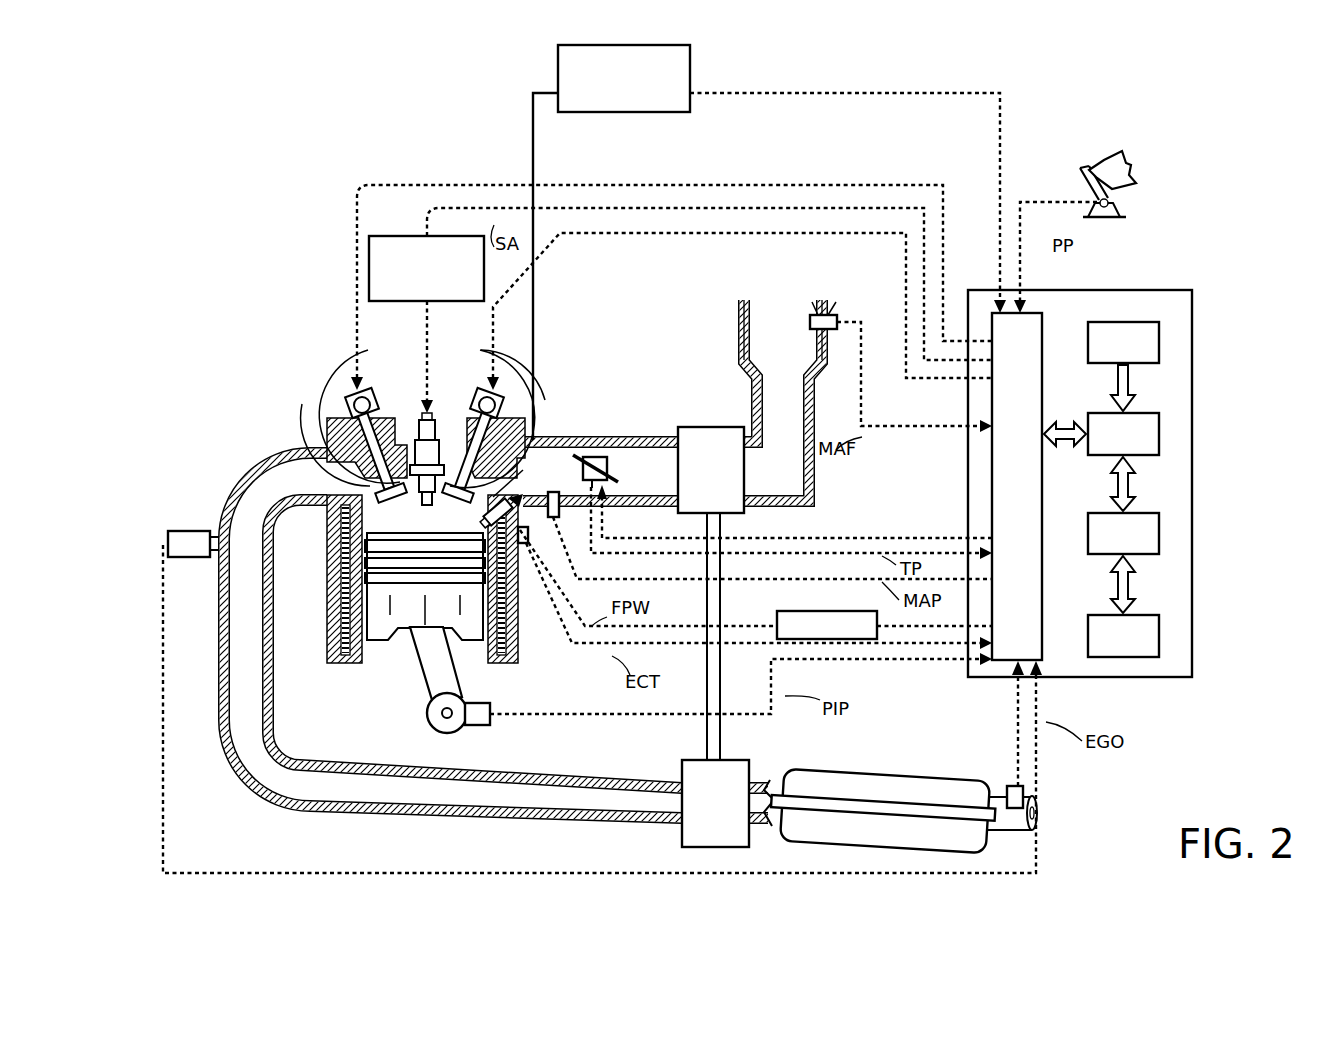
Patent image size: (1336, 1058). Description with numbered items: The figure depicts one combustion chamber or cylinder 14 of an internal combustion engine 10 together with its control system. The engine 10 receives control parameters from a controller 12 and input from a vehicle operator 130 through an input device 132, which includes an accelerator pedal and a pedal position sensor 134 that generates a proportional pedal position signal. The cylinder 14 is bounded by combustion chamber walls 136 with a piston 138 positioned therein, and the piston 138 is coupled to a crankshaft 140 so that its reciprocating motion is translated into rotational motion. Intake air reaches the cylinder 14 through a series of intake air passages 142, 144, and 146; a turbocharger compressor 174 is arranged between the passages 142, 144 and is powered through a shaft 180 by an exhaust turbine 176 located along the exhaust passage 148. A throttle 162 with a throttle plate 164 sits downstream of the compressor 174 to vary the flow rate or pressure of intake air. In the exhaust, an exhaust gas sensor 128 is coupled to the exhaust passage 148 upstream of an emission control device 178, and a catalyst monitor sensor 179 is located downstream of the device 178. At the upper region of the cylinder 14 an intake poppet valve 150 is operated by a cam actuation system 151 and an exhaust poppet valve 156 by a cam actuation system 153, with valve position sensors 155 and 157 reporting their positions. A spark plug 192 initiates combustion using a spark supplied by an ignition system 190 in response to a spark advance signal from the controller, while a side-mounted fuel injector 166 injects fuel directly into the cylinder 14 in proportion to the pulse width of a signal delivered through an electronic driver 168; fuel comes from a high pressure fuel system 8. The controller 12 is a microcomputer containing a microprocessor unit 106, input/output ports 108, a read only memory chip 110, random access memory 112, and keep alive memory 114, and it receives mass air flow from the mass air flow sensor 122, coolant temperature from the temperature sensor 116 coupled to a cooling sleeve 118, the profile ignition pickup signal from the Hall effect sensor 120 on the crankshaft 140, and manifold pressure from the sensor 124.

The internal combustion engine 10 is at (158, 124).
The high pressure fuel system 8 is at (692, 57).
The controller 12 is at (1195, 292).
The cylinder 14 is at (338, 522).
The microprocessor unit 106 is at (1160, 432).
The input/output ports 108 is at (1043, 319).
The read only memory chip 110 is at (1160, 340).
The random access memory 112 is at (1160, 533).
The keep alive memory 114 is at (1160, 637).
The temperature sensor 116 is at (535, 612).
The cooling sleeve 118 is at (515, 652).
The Hall effect sensor 120 is at (481, 726).
The mass air flow sensor 122 is at (828, 314).
The manifold pressure sensor 124 is at (556, 520).
The exhaust gas sensor 128 is at (168, 536).
The vehicle operator 130 is at (1132, 168).
The input device 132 is at (1084, 181).
The pedal position sensor 134 is at (1112, 203).
The combustion chamber walls 136 is at (362, 675).
The piston 138 is at (410, 645).
The crankshaft 140 is at (440, 730).
The intake air passage 142 is at (804, 345).
The intake air passage 144 is at (671, 478).
The intake air passage 146 is at (569, 478).
The exhaust passage 148 is at (321, 487).
The intake poppet valve 150 is at (430, 465).
The cam actuation system 151 is at (472, 395).
The cam actuation system 153 is at (368, 385).
The valve position sensor 155 is at (520, 385).
The exhaust poppet valve 156 is at (345, 445).
The valve position sensor 157 is at (347, 400).
The throttle 162 is at (594, 455).
The throttle plate 164 is at (562, 440).
The fuel injector 166 is at (503, 504).
The electronic driver 168 is at (784, 616).
The compressor 174 is at (698, 427).
The exhaust turbine 176 is at (682, 836).
The emission control device 178 is at (950, 778).
The catalyst monitor sensor 179 is at (1030, 794).
The shaft 180 is at (716, 722).
The ignition system 190 is at (384, 236).
The spark plug 192 is at (420, 448).